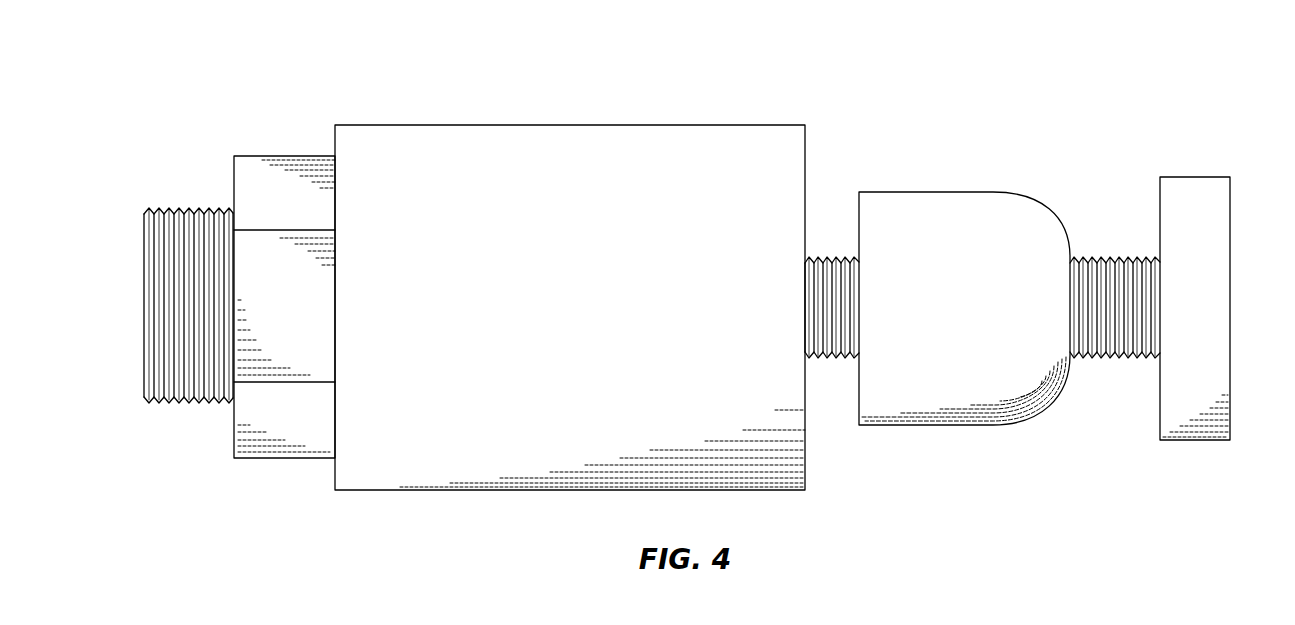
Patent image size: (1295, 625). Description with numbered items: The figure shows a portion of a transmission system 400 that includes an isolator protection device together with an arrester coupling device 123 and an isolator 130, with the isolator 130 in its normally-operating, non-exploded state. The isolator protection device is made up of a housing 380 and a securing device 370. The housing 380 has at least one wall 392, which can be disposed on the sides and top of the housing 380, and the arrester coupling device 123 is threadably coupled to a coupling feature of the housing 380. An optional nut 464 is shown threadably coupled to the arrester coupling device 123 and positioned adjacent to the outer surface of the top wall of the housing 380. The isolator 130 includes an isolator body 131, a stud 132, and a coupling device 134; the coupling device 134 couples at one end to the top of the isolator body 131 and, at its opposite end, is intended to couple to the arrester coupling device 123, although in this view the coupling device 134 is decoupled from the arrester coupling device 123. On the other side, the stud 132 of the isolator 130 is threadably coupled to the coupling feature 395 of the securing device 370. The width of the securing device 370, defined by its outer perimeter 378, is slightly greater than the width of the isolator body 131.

The transmission system 400 is at (1182, 67).
The arrester coupling device 123 is at (185, 207).
The nut 464 is at (287, 155).
The housing 380 is at (538, 123).
The wall 392 is at (548, 320).
The coupling device 134 is at (845, 255).
The isolator 130 is at (963, 271).
The isolator body 131 is at (993, 215).
The stud 132 is at (1120, 255).
The outer perimeter 378 is at (1195, 175).
The coupling feature 395 is at (1157, 367).
The securing device 370 is at (1193, 443).